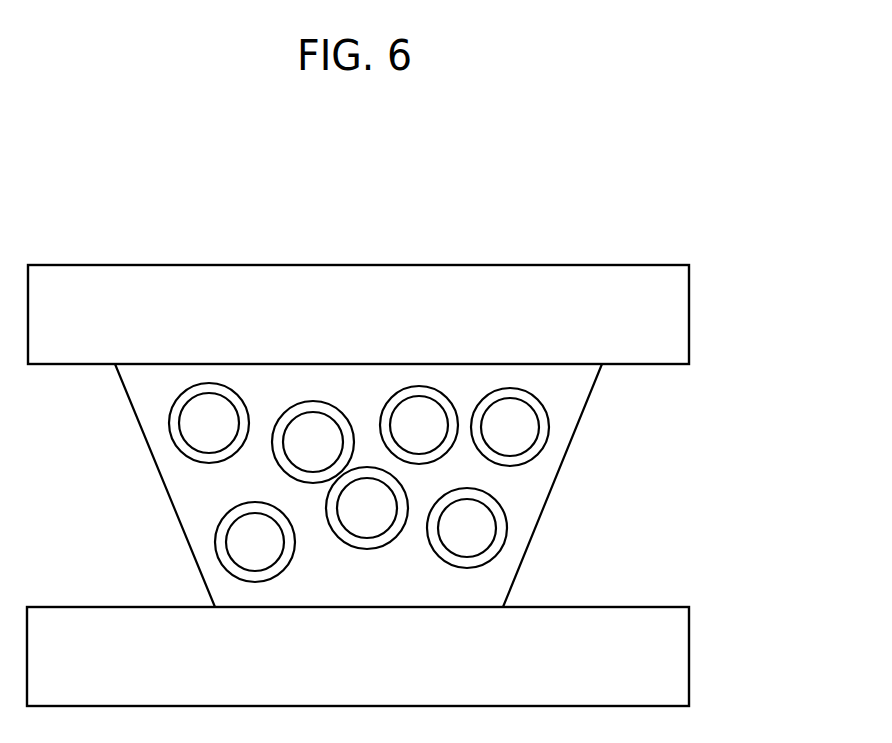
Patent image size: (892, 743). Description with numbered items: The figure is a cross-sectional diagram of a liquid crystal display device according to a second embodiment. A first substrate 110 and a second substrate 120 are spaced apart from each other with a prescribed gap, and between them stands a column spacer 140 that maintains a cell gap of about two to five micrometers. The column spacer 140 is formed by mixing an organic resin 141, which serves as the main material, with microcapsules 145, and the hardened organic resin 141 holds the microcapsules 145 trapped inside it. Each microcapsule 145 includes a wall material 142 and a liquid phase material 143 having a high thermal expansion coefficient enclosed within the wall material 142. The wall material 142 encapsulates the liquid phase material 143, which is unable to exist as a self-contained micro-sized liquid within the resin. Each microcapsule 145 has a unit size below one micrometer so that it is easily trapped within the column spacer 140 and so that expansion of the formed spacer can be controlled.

The first substrate 110 is at (682, 321).
The second substrate 120 is at (682, 655).
The column spacer 140 is at (451, 485).
The organic resin 141 is at (542, 470).
The wall material 142 is at (535, 403).
The liquid phase material 143 is at (525, 430).
The microcapsule 145 is at (443, 482).